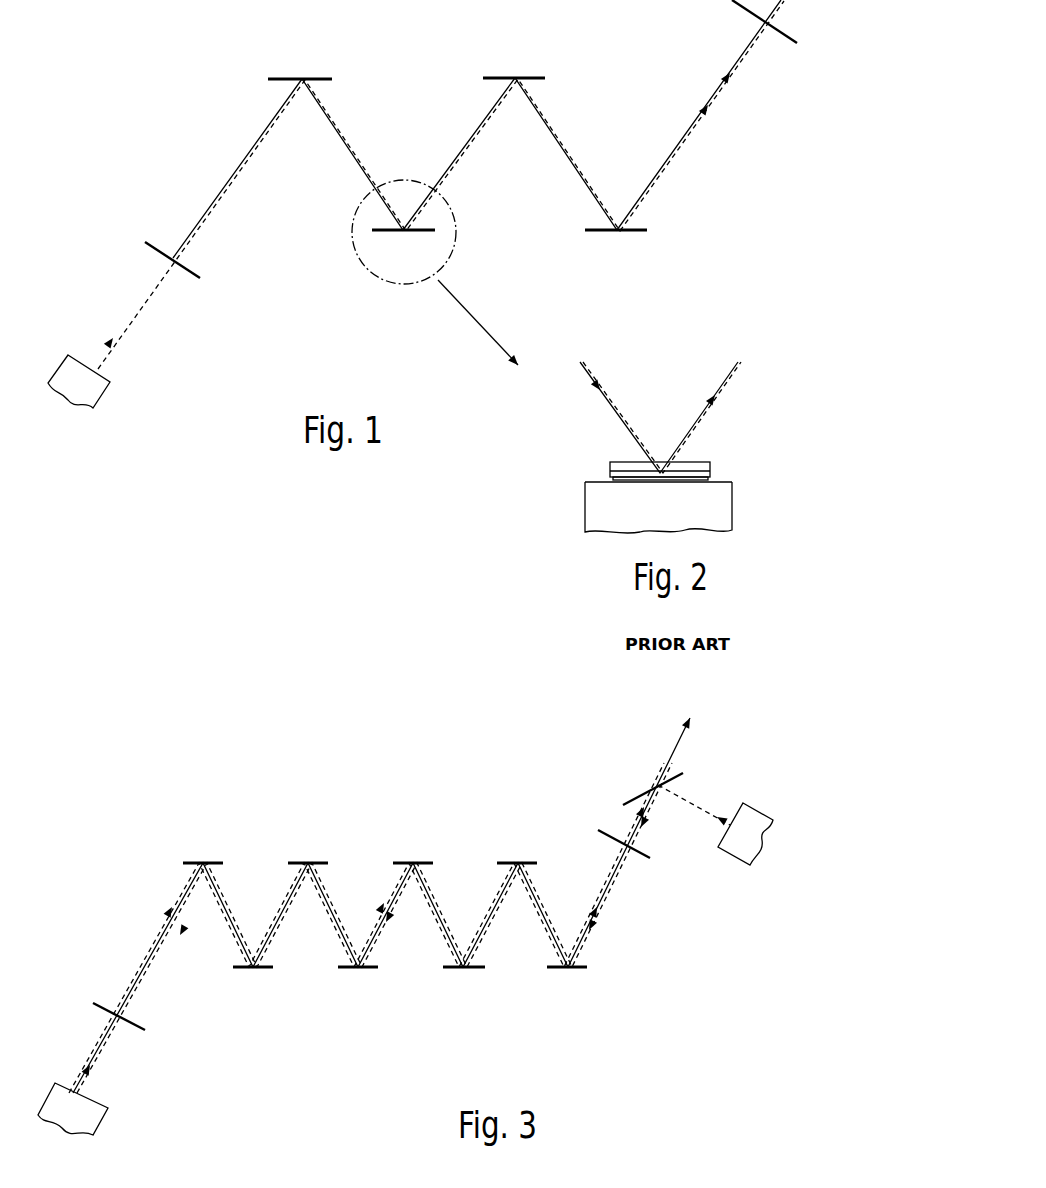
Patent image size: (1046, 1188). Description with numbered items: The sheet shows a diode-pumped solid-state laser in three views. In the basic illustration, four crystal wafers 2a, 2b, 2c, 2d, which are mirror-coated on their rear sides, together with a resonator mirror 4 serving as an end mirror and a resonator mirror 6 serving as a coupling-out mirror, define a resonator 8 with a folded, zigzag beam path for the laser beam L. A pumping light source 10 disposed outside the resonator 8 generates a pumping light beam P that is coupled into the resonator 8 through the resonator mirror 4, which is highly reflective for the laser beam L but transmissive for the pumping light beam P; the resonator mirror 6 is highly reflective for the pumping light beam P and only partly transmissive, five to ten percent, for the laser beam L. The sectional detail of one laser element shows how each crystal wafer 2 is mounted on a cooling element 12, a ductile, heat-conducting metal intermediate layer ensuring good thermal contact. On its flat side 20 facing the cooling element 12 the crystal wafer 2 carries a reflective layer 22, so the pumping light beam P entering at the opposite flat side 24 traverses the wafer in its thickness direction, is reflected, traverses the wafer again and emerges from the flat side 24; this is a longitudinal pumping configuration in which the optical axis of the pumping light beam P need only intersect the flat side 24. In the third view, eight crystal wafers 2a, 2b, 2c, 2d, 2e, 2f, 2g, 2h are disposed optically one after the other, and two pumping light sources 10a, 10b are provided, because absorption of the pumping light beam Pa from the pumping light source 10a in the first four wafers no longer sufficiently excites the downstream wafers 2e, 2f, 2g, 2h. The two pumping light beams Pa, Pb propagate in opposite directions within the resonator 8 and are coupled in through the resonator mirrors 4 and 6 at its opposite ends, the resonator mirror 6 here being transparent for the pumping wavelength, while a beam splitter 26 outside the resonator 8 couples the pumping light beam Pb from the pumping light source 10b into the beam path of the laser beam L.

In FIG. 2, the crystal wafer 2 is at (702, 468).
In FIG. 1, the crystal wafer 2a is at (285, 78).
In FIG. 3, the crystal wafer 2a is at (192, 862).
In FIG. 1, the crystal wafer 2b is at (383, 232).
In FIG. 3, the crystal wafer 2b is at (266, 968).
In FIG. 1, the crystal wafer 2c is at (497, 78).
In FIG. 3, the crystal wafer 2c is at (297, 862).
In FIG. 1, the crystal wafer 2d is at (633, 232).
In FIG. 3, the crystal wafer 2d is at (352, 968).
In FIG. 3, the crystal wafer 2e is at (399, 862).
In FIG. 3, the crystal wafer 2f is at (475, 968).
In FIG. 3, the crystal wafer 2g is at (504, 862).
In FIG. 3, the crystal wafer 2h is at (578, 968).
In FIG. 1, the resonator mirror 4 is at (158, 246).
In FIG. 3, the resonator mirror 4 is at (105, 1010).
In FIG. 1, the resonator mirror 6 is at (776, 40).
In FIG. 3, the resonator mirror 6 is at (648, 845).
In FIG. 1, the resonator 8 is at (408, 87).
In FIG. 3, the resonator 8 is at (355, 815).
In FIG. 1, the pumping light source 10 is at (85, 388).
In FIG. 3, the pumping light source 10a is at (85, 1118).
In FIG. 3, the pumping light source 10b is at (752, 833).
In FIG. 2, the cooling element 12 is at (717, 510).
In FIG. 2, the flat side 20 is at (622, 483).
In FIG. 2, the reflective layer 22 is at (713, 478).
In FIG. 2, the flat side 24 is at (623, 462).
In FIG. 3, the beam splitter 26 is at (632, 800).
In FIG. 1, the laser beam L is at (252, 148).
In FIG. 1, the pumping light beam P is at (473, 143).
In FIG. 2, the pumping light beam P is at (613, 402).
In FIG. 3, the pumping light beam Pa is at (163, 928).
In FIG. 3, the pumping light beam Pb is at (377, 942).